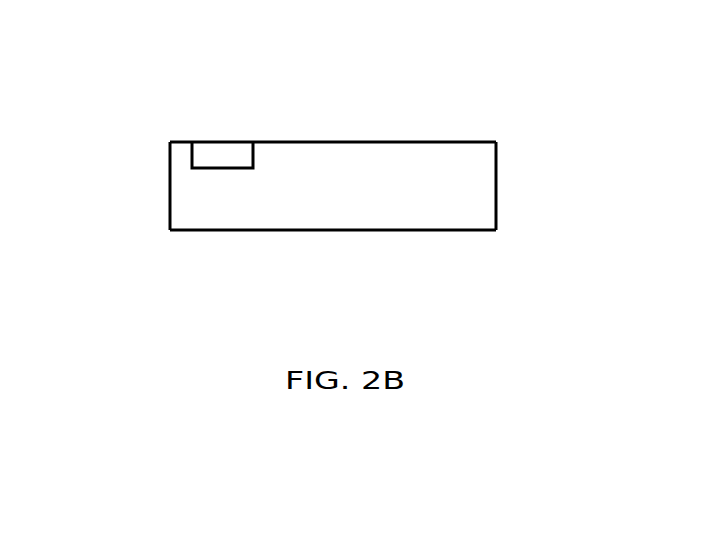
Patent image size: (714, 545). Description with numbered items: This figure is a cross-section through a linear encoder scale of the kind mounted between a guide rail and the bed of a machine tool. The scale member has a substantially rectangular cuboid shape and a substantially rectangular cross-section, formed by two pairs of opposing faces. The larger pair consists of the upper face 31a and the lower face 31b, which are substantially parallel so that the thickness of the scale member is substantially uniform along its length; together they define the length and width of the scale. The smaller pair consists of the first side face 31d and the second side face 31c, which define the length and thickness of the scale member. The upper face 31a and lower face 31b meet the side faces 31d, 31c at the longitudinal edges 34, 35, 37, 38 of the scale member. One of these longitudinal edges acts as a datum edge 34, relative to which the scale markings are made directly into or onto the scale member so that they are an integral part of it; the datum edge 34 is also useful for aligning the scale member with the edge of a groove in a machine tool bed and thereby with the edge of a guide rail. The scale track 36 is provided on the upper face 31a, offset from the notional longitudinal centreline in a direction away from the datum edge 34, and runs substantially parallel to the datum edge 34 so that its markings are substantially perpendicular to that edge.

The upper face 31a is at (333, 142).
The lower face 31b is at (315, 231).
The second side face 31c is at (169, 186).
The first side face 31d is at (496, 186).
The datum edge 34 is at (496, 142).
The longitudinal edge 35 is at (496, 230).
The scale track 36 is at (208, 152).
The longitudinal edge 37 is at (169, 231).
The longitudinal edge 38 is at (169, 142).